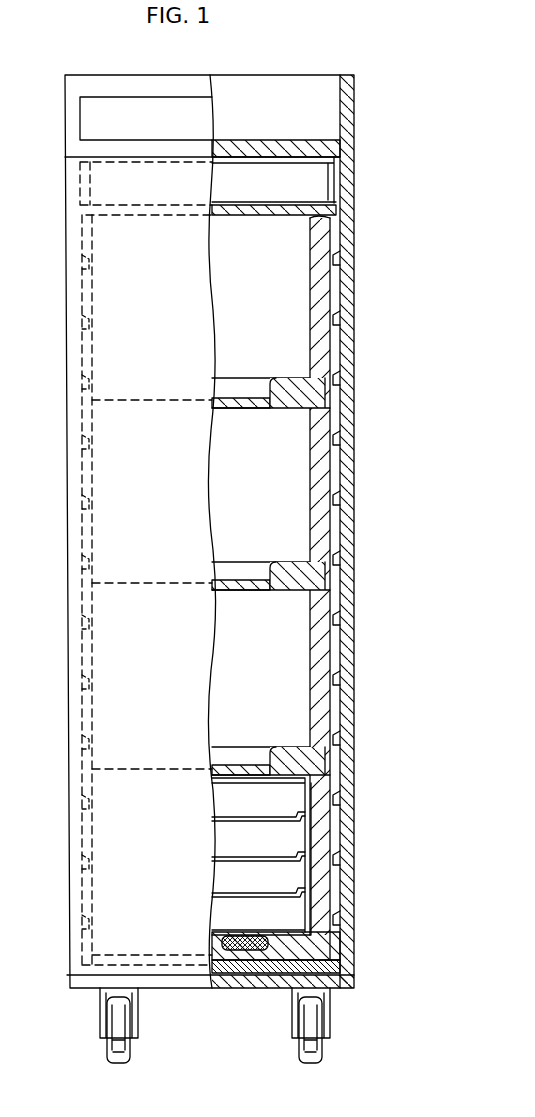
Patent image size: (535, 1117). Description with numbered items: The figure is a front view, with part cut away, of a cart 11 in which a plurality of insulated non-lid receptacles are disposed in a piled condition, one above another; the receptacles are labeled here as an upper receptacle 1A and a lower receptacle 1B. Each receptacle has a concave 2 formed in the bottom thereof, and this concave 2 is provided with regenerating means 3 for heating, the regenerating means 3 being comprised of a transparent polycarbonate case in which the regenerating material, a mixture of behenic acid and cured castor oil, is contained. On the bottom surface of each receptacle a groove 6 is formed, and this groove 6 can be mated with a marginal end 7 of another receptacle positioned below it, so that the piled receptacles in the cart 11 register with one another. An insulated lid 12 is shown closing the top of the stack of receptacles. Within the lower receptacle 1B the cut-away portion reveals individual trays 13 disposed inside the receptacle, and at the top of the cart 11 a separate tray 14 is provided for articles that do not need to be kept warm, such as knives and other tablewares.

The upper compartment / insulating panel 1A is at (343, 641).
The lower compartment 1B is at (330, 818).
The concave 2 is at (257, 760).
The regenerating means 3 is at (270, 942).
The groove 6 is at (333, 588).
The marginal end 7 is at (342, 597).
The cart 11 is at (345, 347).
The insulated lid 12 is at (287, 218).
The individual trays 13 is at (330, 840).
The tray 14 is at (337, 174).